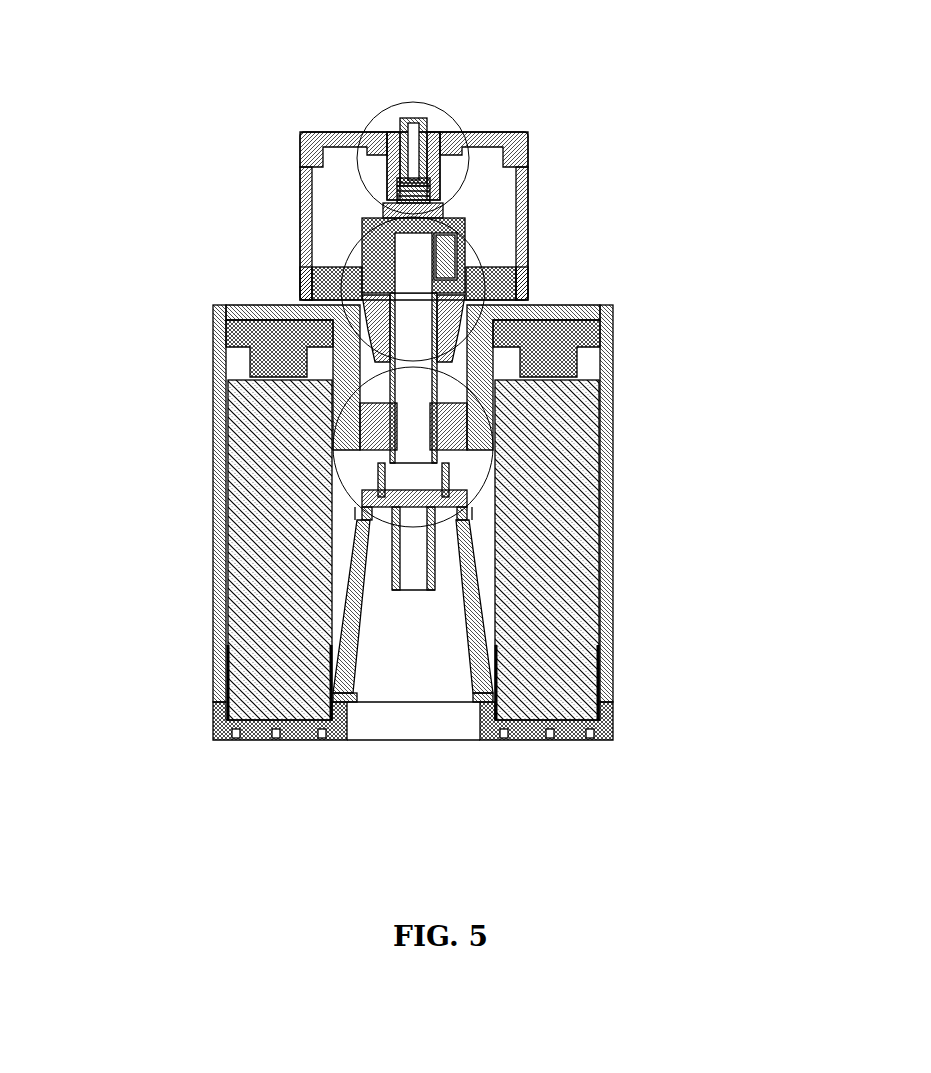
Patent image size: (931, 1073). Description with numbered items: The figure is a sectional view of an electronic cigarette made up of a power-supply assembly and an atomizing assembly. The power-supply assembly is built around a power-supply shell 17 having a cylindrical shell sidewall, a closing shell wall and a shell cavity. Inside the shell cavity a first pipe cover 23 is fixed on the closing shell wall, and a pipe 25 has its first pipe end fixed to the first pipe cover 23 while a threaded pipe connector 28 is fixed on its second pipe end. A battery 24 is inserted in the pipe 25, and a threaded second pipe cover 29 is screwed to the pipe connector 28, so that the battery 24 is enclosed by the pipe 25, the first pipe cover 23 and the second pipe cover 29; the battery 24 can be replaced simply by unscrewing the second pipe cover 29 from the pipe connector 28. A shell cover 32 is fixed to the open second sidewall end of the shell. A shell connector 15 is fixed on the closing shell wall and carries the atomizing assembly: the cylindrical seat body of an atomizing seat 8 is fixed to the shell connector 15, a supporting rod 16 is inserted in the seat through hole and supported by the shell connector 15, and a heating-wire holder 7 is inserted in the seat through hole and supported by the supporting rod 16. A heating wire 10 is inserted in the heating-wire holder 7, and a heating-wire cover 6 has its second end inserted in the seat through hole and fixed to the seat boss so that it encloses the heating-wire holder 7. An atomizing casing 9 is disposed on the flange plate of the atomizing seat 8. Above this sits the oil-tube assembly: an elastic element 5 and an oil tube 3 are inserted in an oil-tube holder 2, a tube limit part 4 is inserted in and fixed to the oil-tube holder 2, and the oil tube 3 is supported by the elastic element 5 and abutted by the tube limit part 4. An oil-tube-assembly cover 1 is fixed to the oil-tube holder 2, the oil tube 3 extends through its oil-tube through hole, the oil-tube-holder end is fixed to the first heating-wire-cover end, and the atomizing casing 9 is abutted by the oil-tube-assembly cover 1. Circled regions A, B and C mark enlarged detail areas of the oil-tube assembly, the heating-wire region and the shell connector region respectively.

The oil-tube-assembly cover 1 is at (303, 133).
The oil-tube holder 2 is at (405, 135).
The oil tube 3 is at (403, 185).
The tube limit part 4 is at (425, 137).
The elastic element 5 is at (392, 192).
The heating-wire cover 6 is at (467, 255).
The heating-wire holder 7 is at (302, 283).
The atomizing seat 8 is at (303, 303).
The atomizing casing 9 is at (440, 200).
The heating wire 10 is at (445, 212).
The shell connector 15 is at (613, 360).
The supporting rod 16 is at (567, 306).
The power-supply shell 17 is at (615, 458).
The first pipe cover 23 is at (217, 325).
The battery 24 is at (267, 597).
The pipe 25 is at (227, 513).
The pipe connector 28 is at (217, 700).
The second pipe cover 29 is at (217, 733).
The shell cover 32 is at (478, 612).
The detail area A is at (458, 120).
The detail area B is at (486, 238).
The detail area C is at (495, 484).